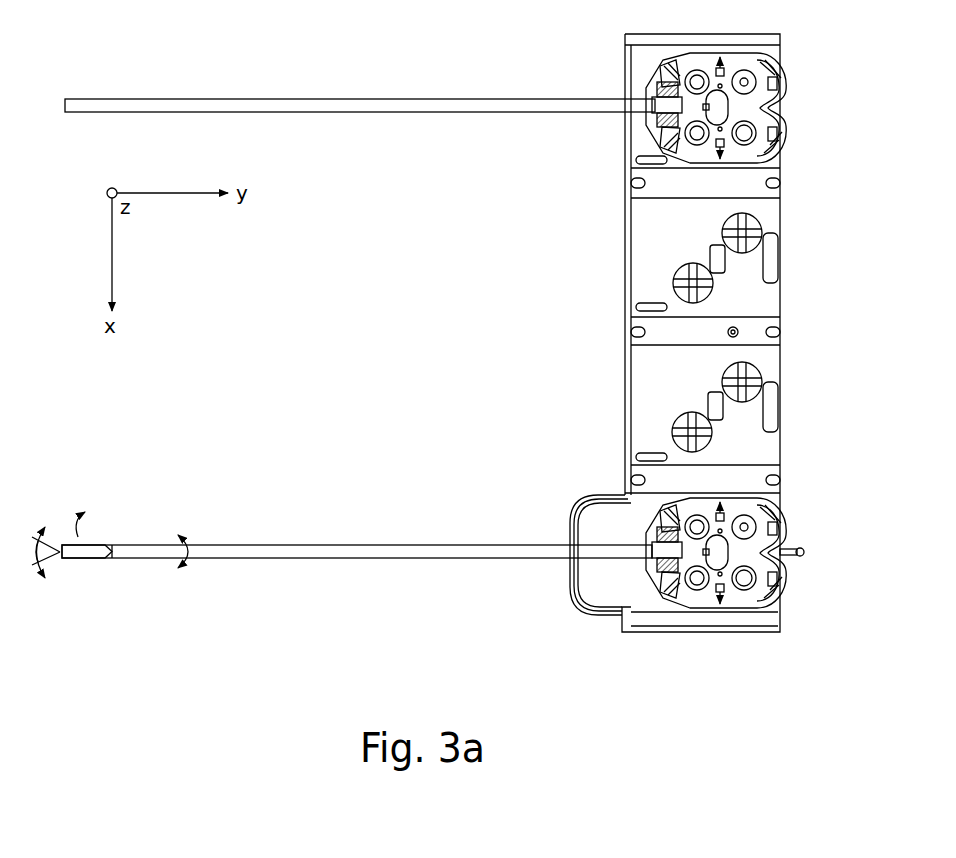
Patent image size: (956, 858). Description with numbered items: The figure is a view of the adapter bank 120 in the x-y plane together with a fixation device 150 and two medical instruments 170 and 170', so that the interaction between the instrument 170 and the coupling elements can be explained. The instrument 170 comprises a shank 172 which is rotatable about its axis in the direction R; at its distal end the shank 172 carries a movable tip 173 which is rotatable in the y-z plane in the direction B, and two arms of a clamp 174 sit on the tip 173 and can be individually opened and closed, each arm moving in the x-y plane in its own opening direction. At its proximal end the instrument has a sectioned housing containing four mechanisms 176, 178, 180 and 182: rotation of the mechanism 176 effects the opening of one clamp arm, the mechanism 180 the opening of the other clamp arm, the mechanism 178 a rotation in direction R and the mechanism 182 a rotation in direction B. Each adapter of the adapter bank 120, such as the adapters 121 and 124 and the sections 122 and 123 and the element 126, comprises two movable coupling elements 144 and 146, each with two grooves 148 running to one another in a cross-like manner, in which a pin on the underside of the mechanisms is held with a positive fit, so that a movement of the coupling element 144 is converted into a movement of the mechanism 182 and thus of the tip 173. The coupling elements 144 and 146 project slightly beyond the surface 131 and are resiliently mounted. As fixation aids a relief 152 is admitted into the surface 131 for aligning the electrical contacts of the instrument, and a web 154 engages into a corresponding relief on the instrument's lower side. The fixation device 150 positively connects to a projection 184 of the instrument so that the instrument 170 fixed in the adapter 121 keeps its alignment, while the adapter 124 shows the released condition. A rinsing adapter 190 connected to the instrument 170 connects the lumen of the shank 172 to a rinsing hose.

The adapter bank 120 is at (594, 342).
The adapter 121 is at (681, 593).
The frame section 122 is at (694, 399).
The frame section 123 is at (693, 255).
The adapter 124 is at (693, 119).
The screw 126 is at (727, 337).
The surface 131 is at (762, 362).
The coupling element 144 is at (748, 371).
The coupling element 146 is at (700, 438).
The grooves 148 is at (752, 395).
The fixation device 150 is at (565, 512).
The relief 152 is at (773, 267).
The web 154 is at (717, 262).
The medical instrument 170 is at (342, 554).
The medical instrument 170' is at (360, 142).
The shank 172 is at (252, 560).
The movable tip 173 is at (87, 552).
The clamp 174 is at (80, 567).
The mechanism 176 is at (676, 537).
The mechanism 178 is at (692, 580).
The mechanism 180 is at (740, 580).
The mechanism 182 is at (742, 527).
The projection 184 is at (785, 53).
The rinsing adapter 190 is at (803, 560).